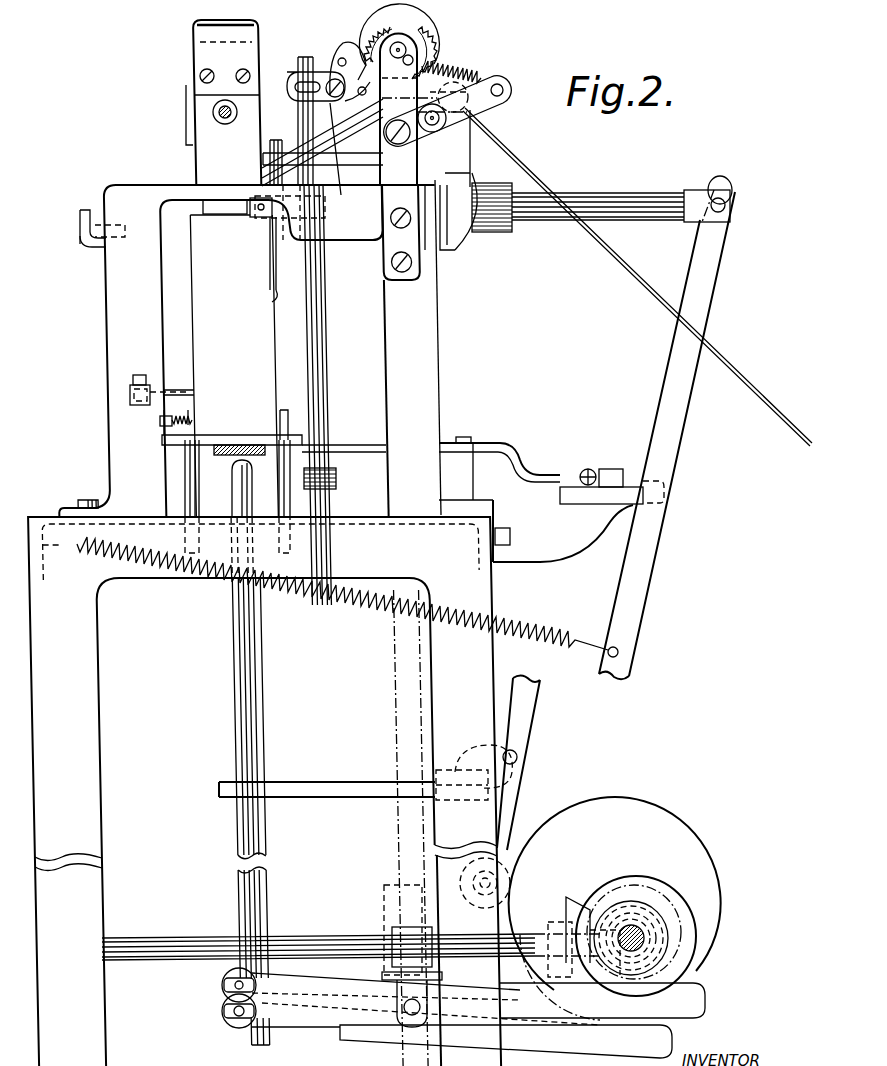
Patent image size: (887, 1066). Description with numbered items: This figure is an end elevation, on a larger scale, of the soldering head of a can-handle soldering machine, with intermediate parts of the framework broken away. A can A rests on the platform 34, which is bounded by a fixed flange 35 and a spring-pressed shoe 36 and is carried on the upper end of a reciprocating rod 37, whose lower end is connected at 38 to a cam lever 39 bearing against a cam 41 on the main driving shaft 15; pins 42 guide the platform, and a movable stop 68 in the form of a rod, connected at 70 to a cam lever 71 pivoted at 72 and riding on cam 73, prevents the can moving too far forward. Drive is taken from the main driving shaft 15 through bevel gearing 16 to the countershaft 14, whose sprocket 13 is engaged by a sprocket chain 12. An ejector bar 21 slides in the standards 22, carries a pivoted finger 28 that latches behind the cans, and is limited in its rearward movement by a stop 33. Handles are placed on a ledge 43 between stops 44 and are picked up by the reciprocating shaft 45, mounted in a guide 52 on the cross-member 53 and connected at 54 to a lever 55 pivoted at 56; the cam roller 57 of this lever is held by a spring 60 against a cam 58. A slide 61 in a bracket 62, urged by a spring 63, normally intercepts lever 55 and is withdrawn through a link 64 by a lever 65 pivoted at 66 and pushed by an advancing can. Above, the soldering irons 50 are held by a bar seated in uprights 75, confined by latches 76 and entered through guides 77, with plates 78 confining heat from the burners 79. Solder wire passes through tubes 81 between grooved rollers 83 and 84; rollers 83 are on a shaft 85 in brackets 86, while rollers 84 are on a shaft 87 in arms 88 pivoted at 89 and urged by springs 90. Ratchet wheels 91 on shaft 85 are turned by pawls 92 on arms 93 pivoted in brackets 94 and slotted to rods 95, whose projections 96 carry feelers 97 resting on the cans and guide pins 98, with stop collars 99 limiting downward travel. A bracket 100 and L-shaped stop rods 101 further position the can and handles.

The sprocket chain 12 is at (392, 720).
The sprocket 13 is at (392, 902).
The countershaft 14 is at (173, 938).
The main driving shaft 15 is at (635, 934).
The bevel gearing 16 is at (580, 905).
The ejector bar 21 is at (130, 400).
The standards 22 is at (106, 347).
The pivoted finger 28 is at (182, 392).
The stop 33 is at (130, 386).
The platform 34 is at (230, 435).
The fixed flange 35 is at (288, 410).
The spring-pressed shoe 36 is at (190, 415).
The reciprocating bar or rod 37 is at (230, 650).
The connection 38 is at (224, 978).
The cam lever 39 is at (300, 980).
The cam 41 is at (700, 1002).
The pins 42 is at (185, 490).
The ledge 43 is at (83, 244).
The stops 44 is at (96, 232).
The reciprocating shaft 45 is at (625, 220).
The soldering irons 50 is at (203, 214).
The guide 52 is at (497, 233).
The cross-member 53 is at (438, 185).
The connection 54 is at (726, 208).
The lever 55 is at (672, 418).
The pivot 56 is at (518, 756).
The cam roller 57 is at (505, 888).
The cam 58 is at (705, 838).
The spring 60 is at (364, 618).
The slide 61 is at (629, 475).
The bracket 62 is at (562, 562).
The spring 63 is at (590, 469).
The link 64 is at (610, 502).
The lever 65 is at (505, 442).
The pivot 66 is at (463, 437).
The movable stop 68 is at (234, 485).
The connection 70 is at (237, 1015).
The cam lever 71 is at (318, 1028).
The pivot 72 is at (412, 1016).
The cam 73 is at (696, 956).
The uprights 75 is at (215, 130).
The latches 76 is at (244, 42).
The guides 77 is at (196, 28).
The plates 78 is at (186, 90).
The burners 79 is at (213, 110).
The tubes 81 is at (305, 212).
The feeding rollers 83 is at (424, 42).
The feeding rollers 84 is at (462, 173).
The shaft 85 is at (410, 30).
The brackets 86 is at (385, 205).
The shaft 87 is at (470, 125).
The arms 88 is at (488, 105).
The pivot 89 is at (402, 144).
The springs 90 is at (462, 70).
The ratchet wheels 91 is at (385, 25).
The pawls 92 is at (352, 48).
The arms 93 is at (300, 112).
The brackets 94 is at (512, 168).
The rods 95 is at (322, 302).
The projections 96 is at (268, 222).
The pins or feelers 97 is at (253, 217).
The guide pins 98 is at (270, 151).
The stop collars 99 is at (332, 478).
The bracket 100 is at (272, 302).
The L-shaped stop rods 101 is at (352, 160).
The can A is at (192, 311).